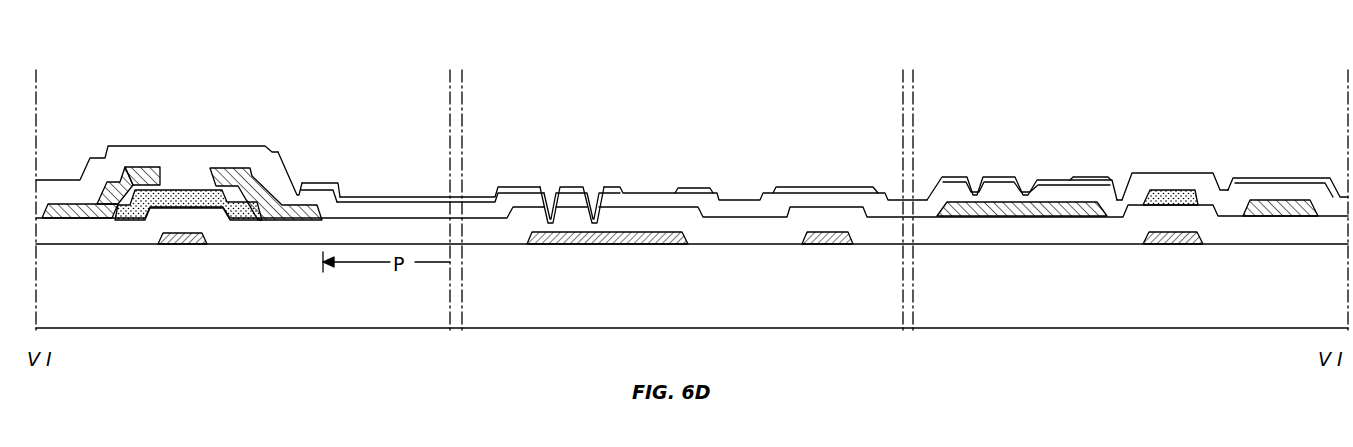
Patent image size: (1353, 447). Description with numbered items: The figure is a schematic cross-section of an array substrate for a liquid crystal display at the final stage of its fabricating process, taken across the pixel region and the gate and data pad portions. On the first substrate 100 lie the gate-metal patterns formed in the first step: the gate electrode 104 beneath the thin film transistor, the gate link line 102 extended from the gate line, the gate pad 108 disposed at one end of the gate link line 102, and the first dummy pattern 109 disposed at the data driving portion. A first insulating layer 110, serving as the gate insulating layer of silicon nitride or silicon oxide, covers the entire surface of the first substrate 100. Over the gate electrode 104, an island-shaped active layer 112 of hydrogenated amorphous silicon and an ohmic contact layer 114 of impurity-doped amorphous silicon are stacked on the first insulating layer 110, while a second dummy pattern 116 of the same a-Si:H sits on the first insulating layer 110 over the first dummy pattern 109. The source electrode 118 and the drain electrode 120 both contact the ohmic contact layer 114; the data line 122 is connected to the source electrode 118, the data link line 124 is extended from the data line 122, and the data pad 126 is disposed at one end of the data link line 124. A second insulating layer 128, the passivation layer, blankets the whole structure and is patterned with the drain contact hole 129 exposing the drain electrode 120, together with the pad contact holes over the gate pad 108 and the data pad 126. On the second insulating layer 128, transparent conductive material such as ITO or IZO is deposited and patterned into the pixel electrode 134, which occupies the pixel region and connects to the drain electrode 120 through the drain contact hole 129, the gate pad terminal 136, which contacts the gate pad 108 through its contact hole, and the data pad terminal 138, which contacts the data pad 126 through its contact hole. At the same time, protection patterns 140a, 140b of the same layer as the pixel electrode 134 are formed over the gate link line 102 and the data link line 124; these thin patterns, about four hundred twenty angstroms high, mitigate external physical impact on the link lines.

The first substrate 100 is at (744, 296).
The gate link line 102 is at (680, 246).
The gate electrode 104 is at (182, 246).
The gate pad 108 is at (548, 246).
The first dummy pattern 109 is at (1150, 246).
The first insulating layer 110 is at (397, 217).
The active layer 112 is at (192, 198).
The ohmic contact layer 114 is at (113, 172).
The second dummy pattern 116 is at (1171, 192).
The source electrode 118 is at (133, 167).
The drain electrode 120 is at (233, 166).
The data line 122 is at (68, 203).
The data link line 124 is at (1085, 218).
The data pad 126 is at (961, 218).
The second insulating layer 128 is at (171, 142).
The drain contact hole 129 is at (298, 181).
The pixel electrode 134 is at (343, 186).
The gate pad terminal 136 is at (546, 195).
The data pad terminal 138 is at (1007, 177).
The protection pattern 140a is at (693, 187).
The protection pattern 140b is at (1090, 177).